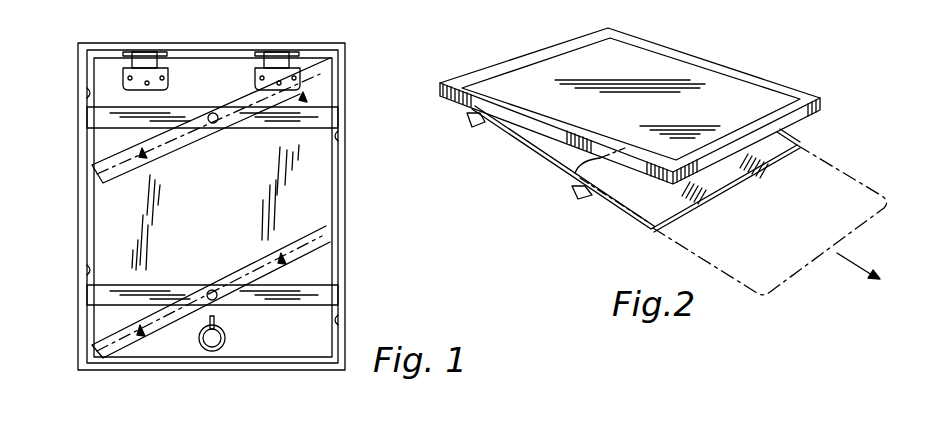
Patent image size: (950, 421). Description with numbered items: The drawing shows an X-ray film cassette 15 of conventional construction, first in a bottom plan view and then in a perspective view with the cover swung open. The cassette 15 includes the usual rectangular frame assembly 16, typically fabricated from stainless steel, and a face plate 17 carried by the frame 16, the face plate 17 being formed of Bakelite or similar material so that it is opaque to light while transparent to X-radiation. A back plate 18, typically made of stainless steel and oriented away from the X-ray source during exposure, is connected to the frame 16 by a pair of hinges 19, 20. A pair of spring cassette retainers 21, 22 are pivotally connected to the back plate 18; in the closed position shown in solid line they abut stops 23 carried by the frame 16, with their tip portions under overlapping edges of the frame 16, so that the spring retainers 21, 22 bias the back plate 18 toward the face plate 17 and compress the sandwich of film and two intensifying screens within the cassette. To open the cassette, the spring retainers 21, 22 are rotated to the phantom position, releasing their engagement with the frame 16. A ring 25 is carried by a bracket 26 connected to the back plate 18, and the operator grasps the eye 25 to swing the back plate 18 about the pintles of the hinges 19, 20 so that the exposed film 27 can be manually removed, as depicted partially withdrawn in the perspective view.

In FIG. 1, the cassette 15 is at (201, 379).
In FIG. 2, the cassette 15 is at (493, 55).
In FIG. 1, the rectangular frame assembly 16 is at (345, 170).
In FIG. 2, the rectangular frame assembly 16 is at (752, 70).
In FIG. 2, the face plate 17 is at (667, 72).
In FIG. 1, the back plate 18 is at (303, 200).
In FIG. 2, the back plate 18 is at (649, 229).
In FIG. 1, the hinge 19 is at (143, 62).
In FIG. 1, the hinge 20 is at (268, 62).
In FIG. 1, the spring cassette retainer 21 is at (325, 118).
In FIG. 2, the spring cassette retainer 21 is at (484, 128).
In FIG. 1, the spring cassette retainer 22 is at (323, 294).
In FIG. 2, the spring cassette retainer 22 is at (603, 212).
In FIG. 1, the stops 23 is at (86, 93).
In FIG. 1, the ring 25 is at (222, 346).
In FIG. 1, the bracket 26 is at (216, 320).
In FIG. 2, the exposed film 27 is at (780, 280).